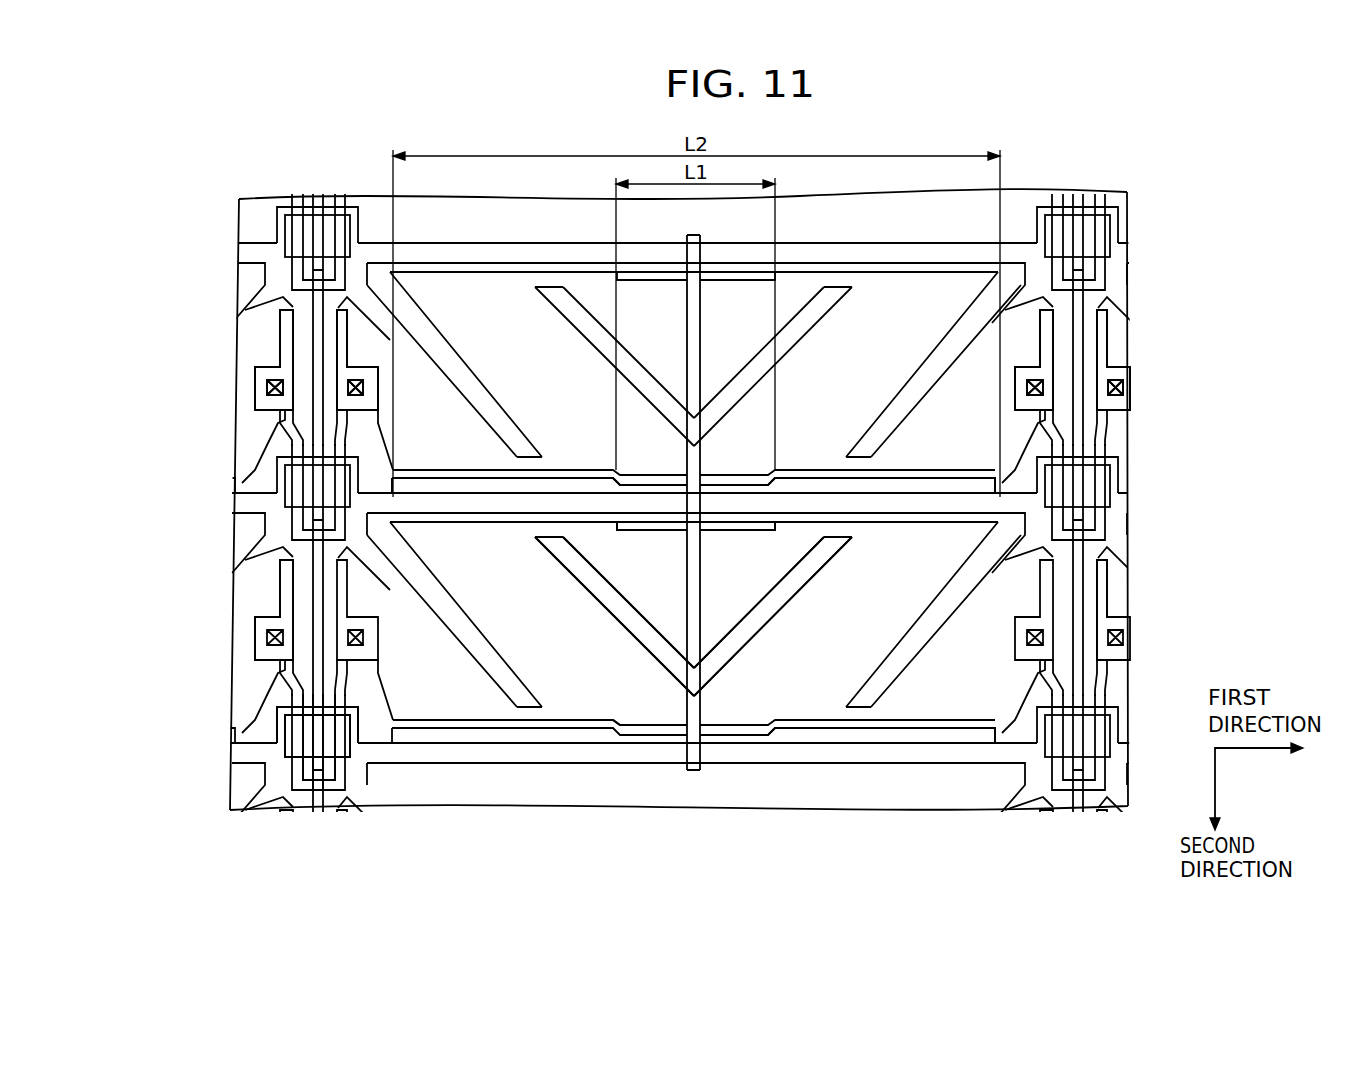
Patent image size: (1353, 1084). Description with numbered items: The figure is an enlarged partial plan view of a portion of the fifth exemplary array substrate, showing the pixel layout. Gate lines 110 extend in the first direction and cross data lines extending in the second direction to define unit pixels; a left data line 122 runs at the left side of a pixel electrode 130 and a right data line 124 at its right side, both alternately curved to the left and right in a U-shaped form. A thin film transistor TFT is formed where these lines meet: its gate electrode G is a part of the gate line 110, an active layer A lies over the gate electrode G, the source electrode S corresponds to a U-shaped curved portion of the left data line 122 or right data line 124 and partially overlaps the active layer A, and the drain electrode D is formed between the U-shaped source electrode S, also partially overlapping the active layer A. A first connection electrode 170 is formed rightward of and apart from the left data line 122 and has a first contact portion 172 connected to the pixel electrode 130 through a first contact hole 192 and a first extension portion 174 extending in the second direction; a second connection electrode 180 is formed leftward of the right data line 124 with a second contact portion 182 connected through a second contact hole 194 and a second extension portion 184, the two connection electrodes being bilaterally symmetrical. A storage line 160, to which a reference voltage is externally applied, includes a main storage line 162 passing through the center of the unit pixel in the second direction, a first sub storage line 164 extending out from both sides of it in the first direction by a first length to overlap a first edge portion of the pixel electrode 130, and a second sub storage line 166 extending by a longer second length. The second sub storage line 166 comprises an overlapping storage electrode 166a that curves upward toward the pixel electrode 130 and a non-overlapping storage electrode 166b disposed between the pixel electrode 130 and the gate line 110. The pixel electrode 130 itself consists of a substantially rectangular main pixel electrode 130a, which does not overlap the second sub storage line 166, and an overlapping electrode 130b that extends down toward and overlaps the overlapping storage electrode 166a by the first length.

The gate line 110 is at (583, 755).
The left data line 122 is at (313, 600).
The right data line 124 is at (1080, 603).
The pixel electrode 130 is at (425, 868).
The main pixel electrode 130a is at (443, 707).
The overlapping electrode 130b is at (600, 710).
The storage line 160 is at (640, 868).
The main storage line 162 is at (688, 700).
The first sub storage line 164 is at (723, 527).
The second sub storage line 166 is at (790, 735).
The overlapping storage electrode 166a is at (735, 486).
The non-overlapping storage electrode 166b is at (583, 485).
The first connection electrode 170 is at (137, 318).
The first contact portion 172 is at (340, 382).
The first extension portion 174 is at (345, 315).
The second connection electrode 180 is at (1258, 318).
The second contact portion 182 is at (1052, 383).
The second extension portion 184 is at (1047, 317).
The first contact hole 192 is at (325, 423).
The second contact hole 194 is at (1060, 423).
The gate electrode G is at (237, 730).
The active layer A is at (255, 735).
The drain electrode D is at (313, 760).
The source electrode S is at (335, 775).
The thin film transistor TFT is at (235, 868).